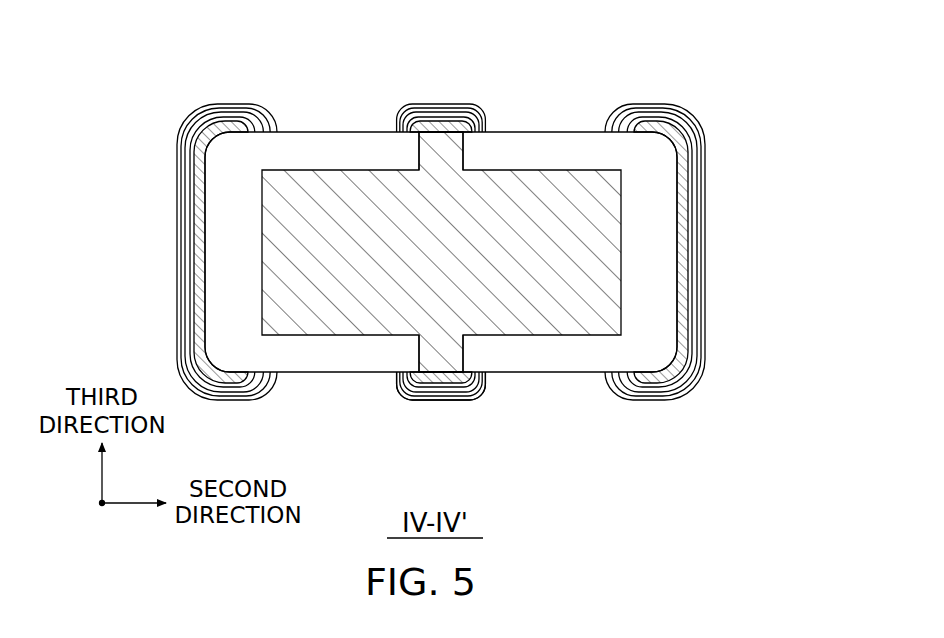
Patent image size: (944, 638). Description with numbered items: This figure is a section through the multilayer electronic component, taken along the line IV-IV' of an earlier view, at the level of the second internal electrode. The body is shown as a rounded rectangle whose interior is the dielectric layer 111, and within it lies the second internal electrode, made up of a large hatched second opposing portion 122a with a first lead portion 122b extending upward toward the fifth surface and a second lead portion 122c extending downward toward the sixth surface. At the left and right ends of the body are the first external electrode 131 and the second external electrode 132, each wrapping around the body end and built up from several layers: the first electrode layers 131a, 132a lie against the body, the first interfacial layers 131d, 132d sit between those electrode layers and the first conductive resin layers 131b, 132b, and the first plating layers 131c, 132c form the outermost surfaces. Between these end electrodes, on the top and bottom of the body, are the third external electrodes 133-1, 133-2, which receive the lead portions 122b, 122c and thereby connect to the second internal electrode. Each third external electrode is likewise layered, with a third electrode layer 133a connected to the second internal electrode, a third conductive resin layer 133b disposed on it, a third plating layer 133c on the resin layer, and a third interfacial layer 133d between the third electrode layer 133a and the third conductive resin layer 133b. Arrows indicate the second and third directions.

The dielectric layer 111 is at (218, 305).
The second opposing portion 122a is at (448, 262).
The 2-1-th lead portion 122b is at (433, 150).
The 2-2-th lead portion 122c is at (447, 353).
The first external electrode 131 is at (147, 228).
The first electrode layer 131a is at (238, 122).
The first conductive resin layer 131b is at (183, 142).
The first plating layer 131c is at (178, 163).
The first interfacial layer 131d is at (175, 180).
The second external electrode 132 is at (736, 228).
The first electrode layer 132a is at (645, 115).
The first conductive resin layer 132b is at (703, 140).
The first plating layer 132c is at (700, 163).
The first interfacial layer 132d is at (697, 182).
The third external electrode 133-1 is at (444, 231).
The third external electrode 133-2 is at (297, 452).
The third electrode layer 133a is at (394, 253).
The third conductive resin layer 133b is at (428, 105).
The third plating layer 133c is at (457, 105).
The third interfacial layer 133d is at (477, 108).